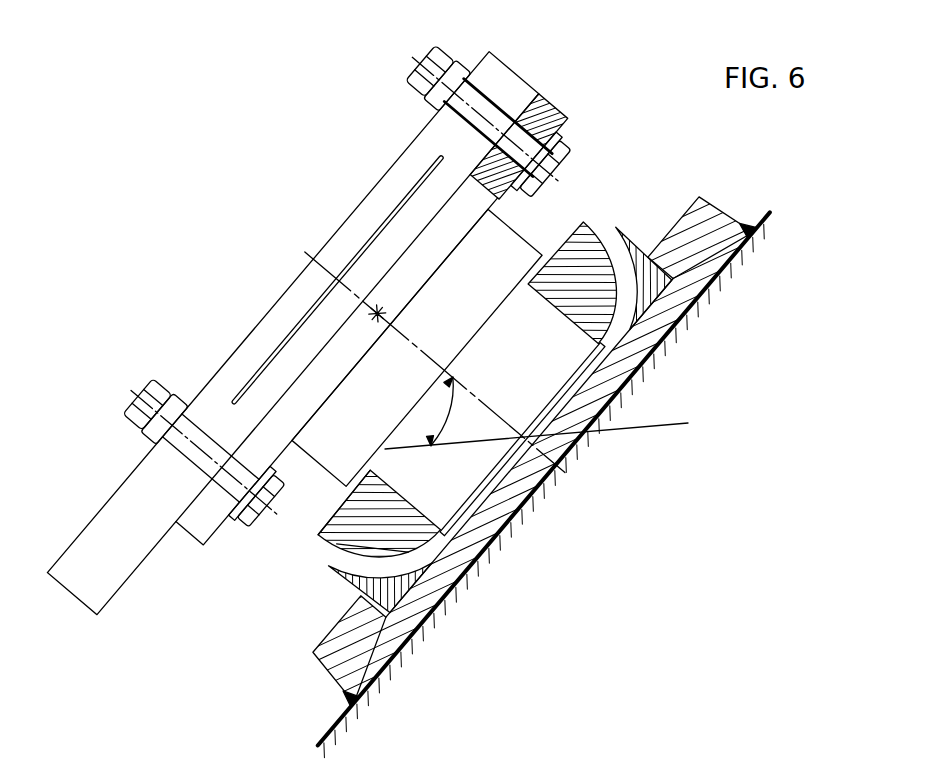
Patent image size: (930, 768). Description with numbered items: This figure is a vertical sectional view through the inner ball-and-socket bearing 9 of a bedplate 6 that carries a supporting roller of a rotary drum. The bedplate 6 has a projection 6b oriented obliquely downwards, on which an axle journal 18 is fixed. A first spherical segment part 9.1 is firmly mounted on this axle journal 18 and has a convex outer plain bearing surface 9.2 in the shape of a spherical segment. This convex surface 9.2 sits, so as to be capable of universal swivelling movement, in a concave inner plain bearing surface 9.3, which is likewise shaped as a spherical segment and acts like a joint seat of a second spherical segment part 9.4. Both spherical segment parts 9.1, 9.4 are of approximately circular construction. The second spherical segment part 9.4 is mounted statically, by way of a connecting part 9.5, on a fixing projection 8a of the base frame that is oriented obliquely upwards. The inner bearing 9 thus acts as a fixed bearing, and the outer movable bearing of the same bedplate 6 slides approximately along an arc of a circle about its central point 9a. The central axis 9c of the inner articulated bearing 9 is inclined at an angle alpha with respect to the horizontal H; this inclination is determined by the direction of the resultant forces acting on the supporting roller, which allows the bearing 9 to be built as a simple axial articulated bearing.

The bedplate 6 is at (226, 352).
The projection of the bedplate 6b is at (523, 92).
The fixing projection of the base frame 8a is at (666, 346).
The inner ball-and-socket bearing 9 is at (613, 177).
The central point of the inner ball-and-socket bearing 9a is at (377, 314).
The central axis of the inner articulated bearing 9c is at (540, 434).
The first spherical segment part 9.1 is at (326, 528).
The convex outer plain bearing surface 9.2 is at (340, 548).
The concave inner plain bearing surface 9.3 is at (408, 514).
The second spherical segment part 9.4 is at (345, 566).
The connecting part 9.5 is at (702, 222).
The axle journal 18 is at (513, 312).
The horizontal H is at (536, 445).